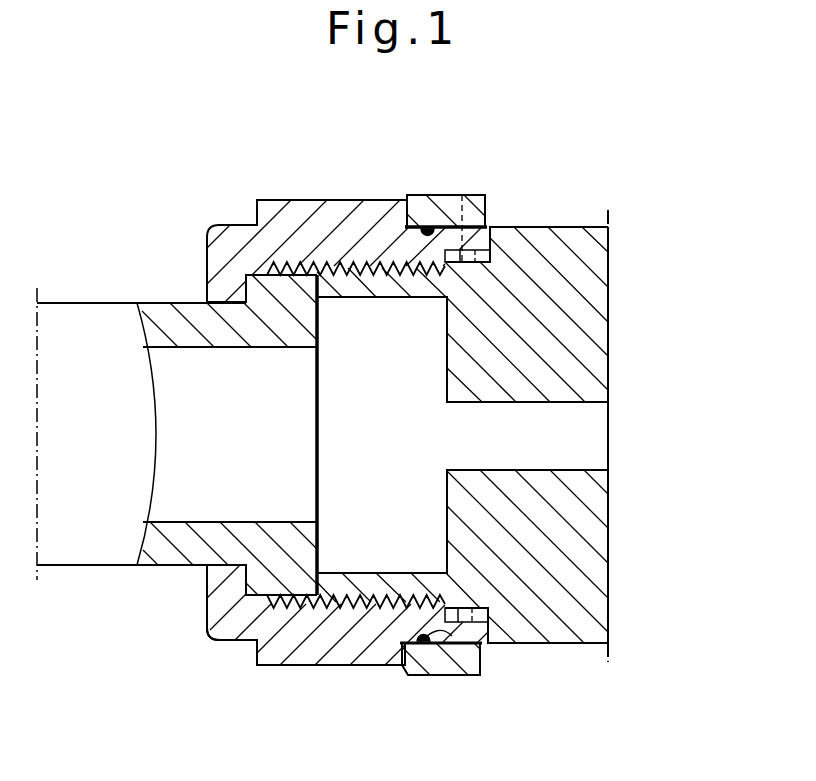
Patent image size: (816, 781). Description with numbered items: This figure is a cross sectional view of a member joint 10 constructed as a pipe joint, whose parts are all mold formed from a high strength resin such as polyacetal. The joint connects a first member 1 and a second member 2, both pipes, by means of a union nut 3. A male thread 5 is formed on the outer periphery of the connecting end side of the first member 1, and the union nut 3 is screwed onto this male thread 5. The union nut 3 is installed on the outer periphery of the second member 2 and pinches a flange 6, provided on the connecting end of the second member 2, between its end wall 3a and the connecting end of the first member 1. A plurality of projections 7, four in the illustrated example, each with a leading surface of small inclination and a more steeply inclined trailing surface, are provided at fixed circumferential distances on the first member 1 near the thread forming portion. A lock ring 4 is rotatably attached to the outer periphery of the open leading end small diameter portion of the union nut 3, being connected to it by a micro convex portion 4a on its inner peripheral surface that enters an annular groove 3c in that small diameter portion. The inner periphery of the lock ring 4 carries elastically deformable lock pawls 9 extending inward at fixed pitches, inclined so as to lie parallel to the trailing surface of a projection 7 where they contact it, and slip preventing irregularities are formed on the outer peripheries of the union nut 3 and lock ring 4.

The first member 1 is at (604, 255).
The second member 2 is at (158, 303).
The union nut 3 is at (305, 198).
The end wall 3a is at (203, 578).
The annular groove 3c is at (455, 640).
The lock ring 4 is at (442, 195).
The micro convex portion 4a is at (423, 647).
The male thread 5 is at (350, 613).
The flange 6 is at (288, 583).
The projection 7 is at (456, 255).
The lock pawl 9 is at (462, 200).
The member joint 10 is at (510, 170).